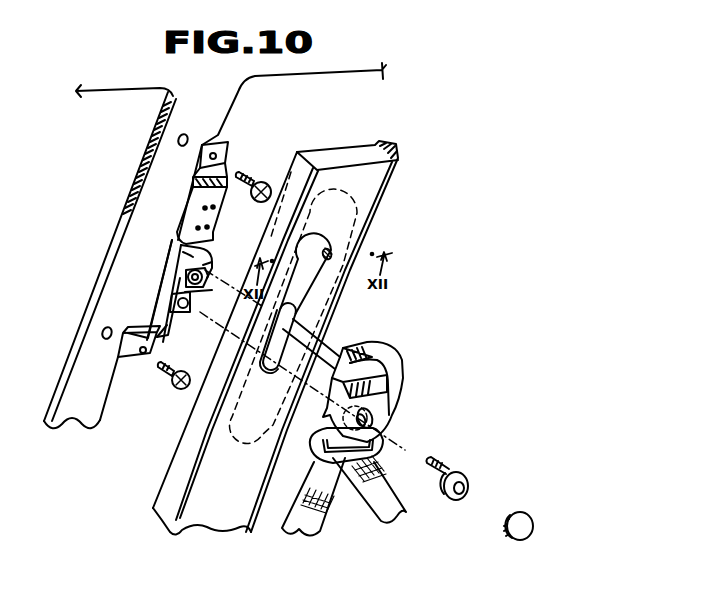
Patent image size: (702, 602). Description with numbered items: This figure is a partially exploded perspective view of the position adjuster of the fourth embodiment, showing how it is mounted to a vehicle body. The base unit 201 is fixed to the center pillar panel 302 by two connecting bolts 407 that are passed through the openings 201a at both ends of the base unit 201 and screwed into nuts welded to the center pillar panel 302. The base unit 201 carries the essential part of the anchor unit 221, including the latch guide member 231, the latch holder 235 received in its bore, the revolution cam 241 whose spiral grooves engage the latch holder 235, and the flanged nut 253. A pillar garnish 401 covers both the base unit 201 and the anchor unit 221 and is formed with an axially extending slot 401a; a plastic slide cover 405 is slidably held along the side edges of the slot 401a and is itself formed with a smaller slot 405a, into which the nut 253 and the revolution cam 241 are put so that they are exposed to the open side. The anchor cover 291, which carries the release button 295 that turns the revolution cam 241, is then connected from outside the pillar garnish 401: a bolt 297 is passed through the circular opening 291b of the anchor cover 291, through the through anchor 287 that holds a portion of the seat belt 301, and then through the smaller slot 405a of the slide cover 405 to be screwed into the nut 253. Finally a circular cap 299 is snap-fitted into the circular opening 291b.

The base unit 201 is at (203, 198).
The openings 201a is at (230, 160).
The anchor unit 221 is at (138, 284).
The latch guide member 231 is at (203, 265).
The latch holder 235 is at (170, 265).
The revolution cam 241 is at (187, 277).
The nut 253 is at (180, 303).
The through anchor 287 is at (383, 460).
The anchor cover 291 is at (400, 375).
The circular opening 291b is at (370, 420).
The release button 295 is at (373, 390).
The bolt 297 is at (447, 468).
The circular cap 299 is at (523, 512).
The seat belt 301 is at (330, 507).
The center pillar panel 302 is at (83, 353).
The pillar garnish 401 is at (387, 195).
The slot 401a is at (333, 248).
The slide cover 405 is at (302, 292).
The smaller slot 405a is at (292, 320).
The connecting bolts 407 is at (248, 165).